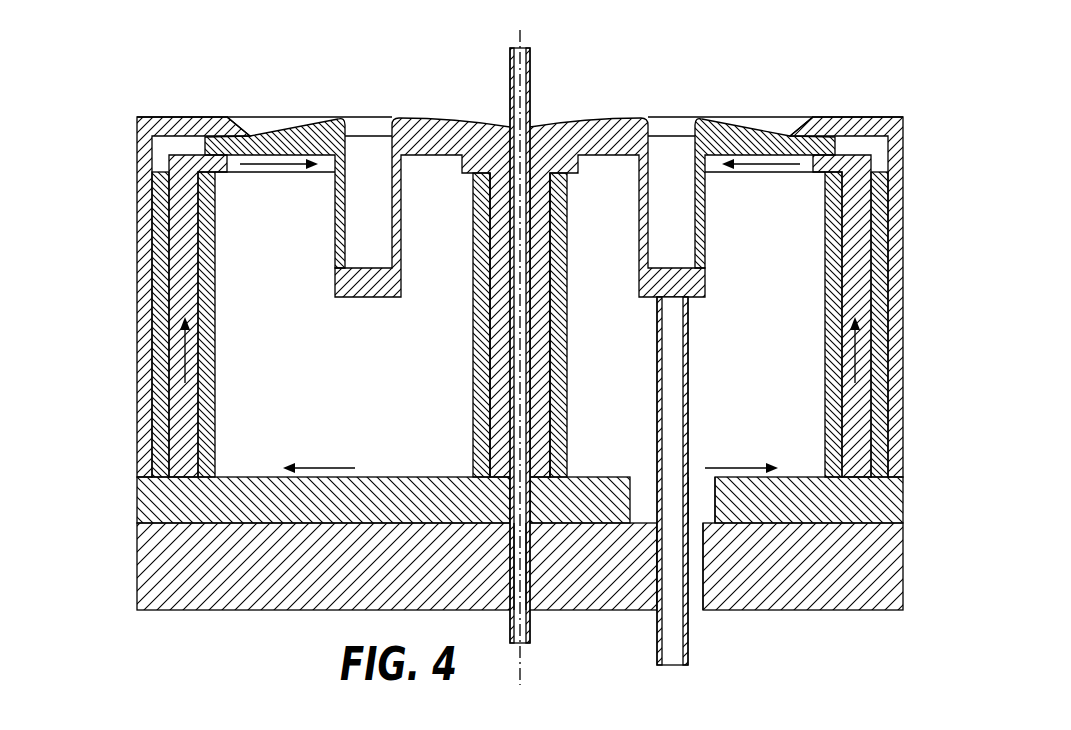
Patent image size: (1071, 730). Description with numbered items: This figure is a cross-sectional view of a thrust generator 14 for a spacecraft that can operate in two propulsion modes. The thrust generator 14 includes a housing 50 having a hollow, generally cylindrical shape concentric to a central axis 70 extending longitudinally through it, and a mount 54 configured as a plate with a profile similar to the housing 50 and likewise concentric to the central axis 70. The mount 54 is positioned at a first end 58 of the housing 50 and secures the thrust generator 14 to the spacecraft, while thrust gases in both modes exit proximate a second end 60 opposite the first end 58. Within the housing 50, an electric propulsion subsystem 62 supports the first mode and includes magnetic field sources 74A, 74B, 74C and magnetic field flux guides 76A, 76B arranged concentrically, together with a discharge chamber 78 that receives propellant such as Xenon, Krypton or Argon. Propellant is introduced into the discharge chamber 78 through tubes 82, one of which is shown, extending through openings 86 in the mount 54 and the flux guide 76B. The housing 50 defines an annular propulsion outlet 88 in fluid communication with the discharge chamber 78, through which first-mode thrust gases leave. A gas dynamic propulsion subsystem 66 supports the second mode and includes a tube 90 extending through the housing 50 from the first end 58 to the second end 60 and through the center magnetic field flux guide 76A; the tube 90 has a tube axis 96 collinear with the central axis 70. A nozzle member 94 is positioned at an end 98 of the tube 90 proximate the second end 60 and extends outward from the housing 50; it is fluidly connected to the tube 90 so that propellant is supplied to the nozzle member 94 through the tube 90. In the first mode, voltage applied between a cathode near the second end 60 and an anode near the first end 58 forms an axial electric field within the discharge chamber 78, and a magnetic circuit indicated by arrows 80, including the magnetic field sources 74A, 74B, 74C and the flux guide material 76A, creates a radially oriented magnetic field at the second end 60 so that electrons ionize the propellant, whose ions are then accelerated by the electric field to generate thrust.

The thrust generator 14 is at (122, 72).
The housing 50 is at (905, 300).
The mount 54 is at (167, 576).
The first end 58 is at (860, 480).
The second end 60 is at (857, 117).
The electric propulsion subsystem 62 is at (182, 130).
The gas dynamic propulsion subsystem 66 is at (465, 72).
The central axis 70 is at (532, 627).
The magnetic field source 74A is at (163, 272).
The magnetic field source 74B is at (208, 445).
The magnetic field source 74C is at (562, 338).
The magnetic field flux guide 76A is at (170, 214).
The magnetic field flux guide 76B is at (820, 515).
The discharge chamber 78 is at (288, 299).
The arrows 80 is at (185, 355).
The tubes 82 is at (688, 408).
The openings 86 is at (715, 502).
The annular propulsion outlet 88 is at (683, 118).
The tube 90 is at (543, 435).
The nozzle member 94 is at (527, 95).
The tube axis 96 is at (522, 568).
The end 98 is at (527, 131).